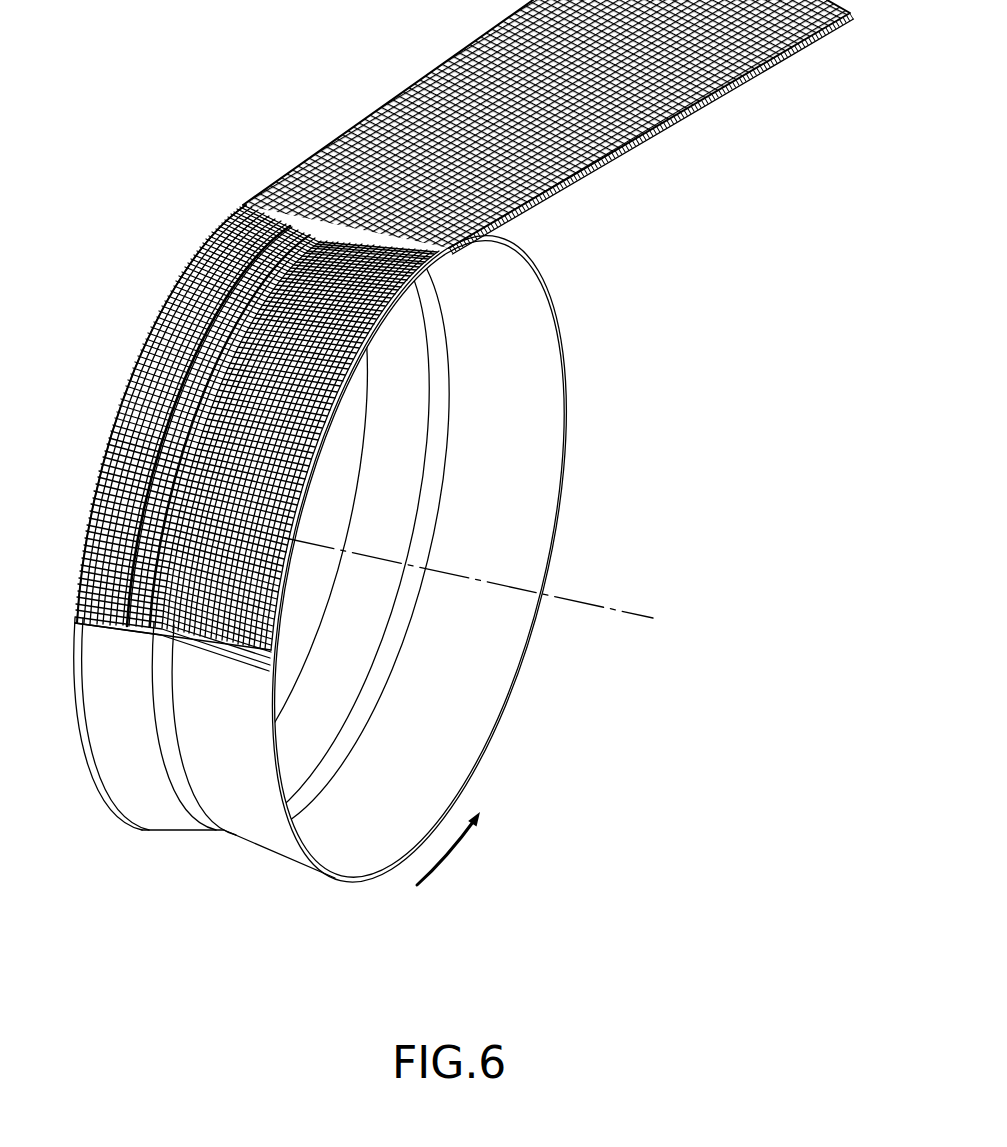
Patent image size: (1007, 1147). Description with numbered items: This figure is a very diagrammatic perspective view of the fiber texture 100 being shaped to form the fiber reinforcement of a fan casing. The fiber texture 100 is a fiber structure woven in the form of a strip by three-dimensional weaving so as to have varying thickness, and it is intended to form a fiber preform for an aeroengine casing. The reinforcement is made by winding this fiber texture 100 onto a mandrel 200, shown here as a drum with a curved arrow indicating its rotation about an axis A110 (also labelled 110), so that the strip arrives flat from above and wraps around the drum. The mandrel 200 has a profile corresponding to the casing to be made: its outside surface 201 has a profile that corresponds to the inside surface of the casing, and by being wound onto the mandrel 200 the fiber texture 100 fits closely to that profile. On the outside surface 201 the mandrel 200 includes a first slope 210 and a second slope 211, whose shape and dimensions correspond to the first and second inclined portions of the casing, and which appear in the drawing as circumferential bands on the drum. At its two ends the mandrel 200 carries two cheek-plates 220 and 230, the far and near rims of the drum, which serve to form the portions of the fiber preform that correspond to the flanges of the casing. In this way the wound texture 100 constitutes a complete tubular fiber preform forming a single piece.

The fiber texture 100 is at (389, 95).
The mandrel 200 is at (350, 577).
The outside surface 201 is at (266, 848).
The first slope 210 is at (160, 800).
The second slope 211 is at (227, 808).
The cheek-plate 220 is at (128, 822).
The cheek-plate 230 is at (350, 886).
The rotation axis A110 110 is at (476, 579).
The rotation axis A110 is at (476, 579).